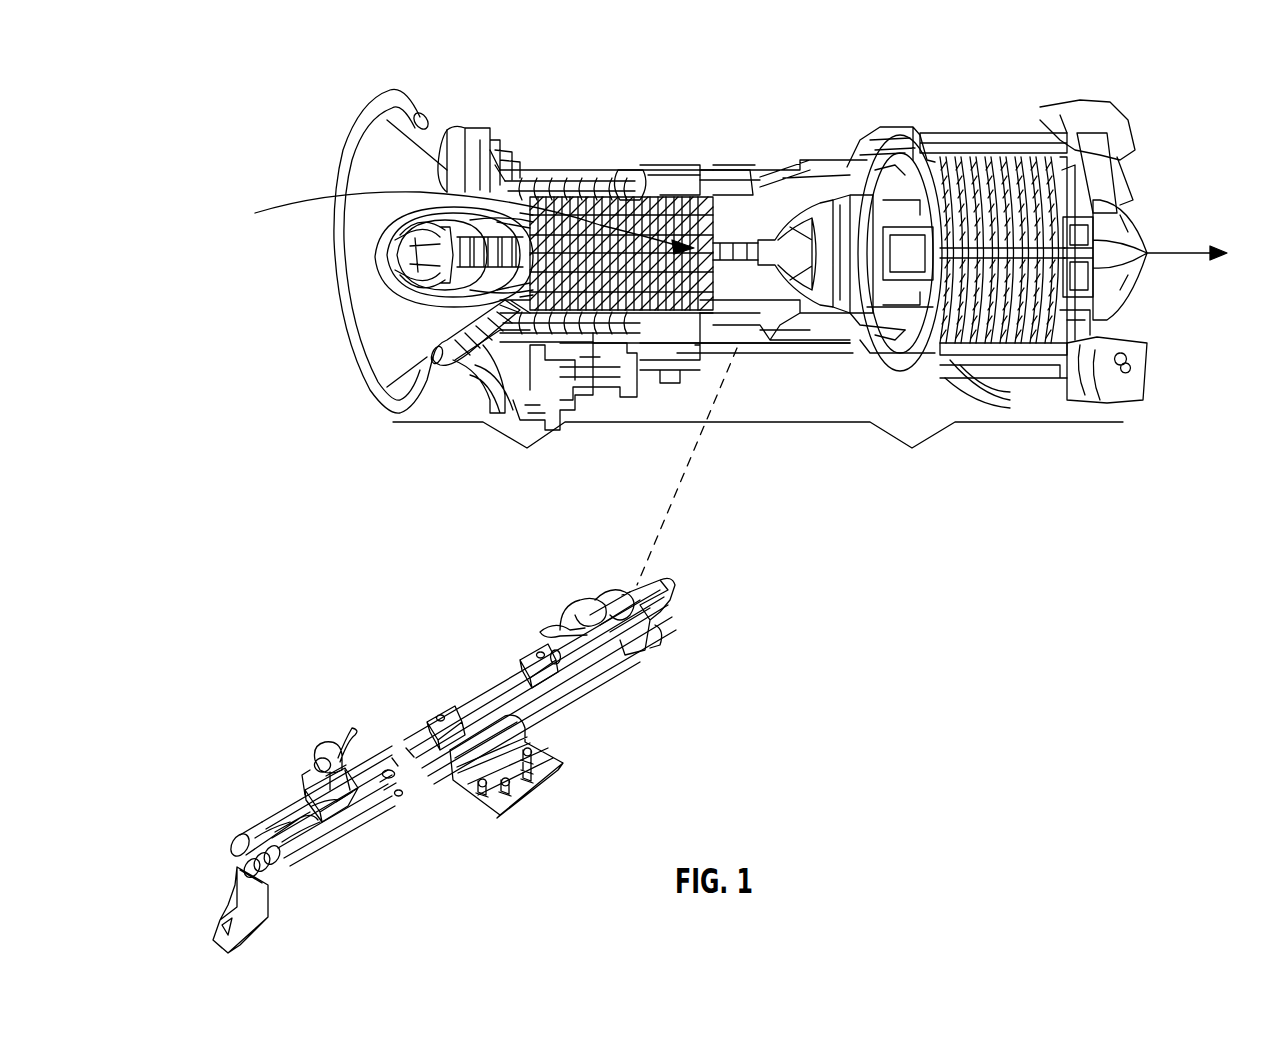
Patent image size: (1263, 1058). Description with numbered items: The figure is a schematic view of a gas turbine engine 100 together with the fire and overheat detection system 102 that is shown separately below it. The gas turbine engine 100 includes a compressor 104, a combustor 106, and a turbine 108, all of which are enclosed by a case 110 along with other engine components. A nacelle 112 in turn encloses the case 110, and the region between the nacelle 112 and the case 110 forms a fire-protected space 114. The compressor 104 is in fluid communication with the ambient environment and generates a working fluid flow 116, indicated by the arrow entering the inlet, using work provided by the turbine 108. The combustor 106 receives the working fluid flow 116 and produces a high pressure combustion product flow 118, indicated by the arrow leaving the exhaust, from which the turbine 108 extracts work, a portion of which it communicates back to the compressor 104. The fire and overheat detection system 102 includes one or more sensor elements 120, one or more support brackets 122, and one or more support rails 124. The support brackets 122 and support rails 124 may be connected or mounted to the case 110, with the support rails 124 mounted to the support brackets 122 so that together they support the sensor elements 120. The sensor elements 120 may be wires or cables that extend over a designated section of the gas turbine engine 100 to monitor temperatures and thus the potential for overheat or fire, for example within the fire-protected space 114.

The gas turbine engine 100 is at (384, 79).
The fire and overheat detection system 102 is at (374, 643).
The compressor 104 is at (625, 310).
The combustor 106 is at (793, 302).
The turbine 108 is at (993, 343).
The case 110 is at (627, 195).
The nacelle 112 is at (447, 425).
The fire-protected space 114 is at (772, 401).
The working fluid flow 116 is at (277, 212).
The high pressure combustion product flow 118 is at (1180, 255).
The sensor element 120 is at (348, 815).
The support bracket 122 is at (245, 928).
The support rail 124 is at (400, 782).